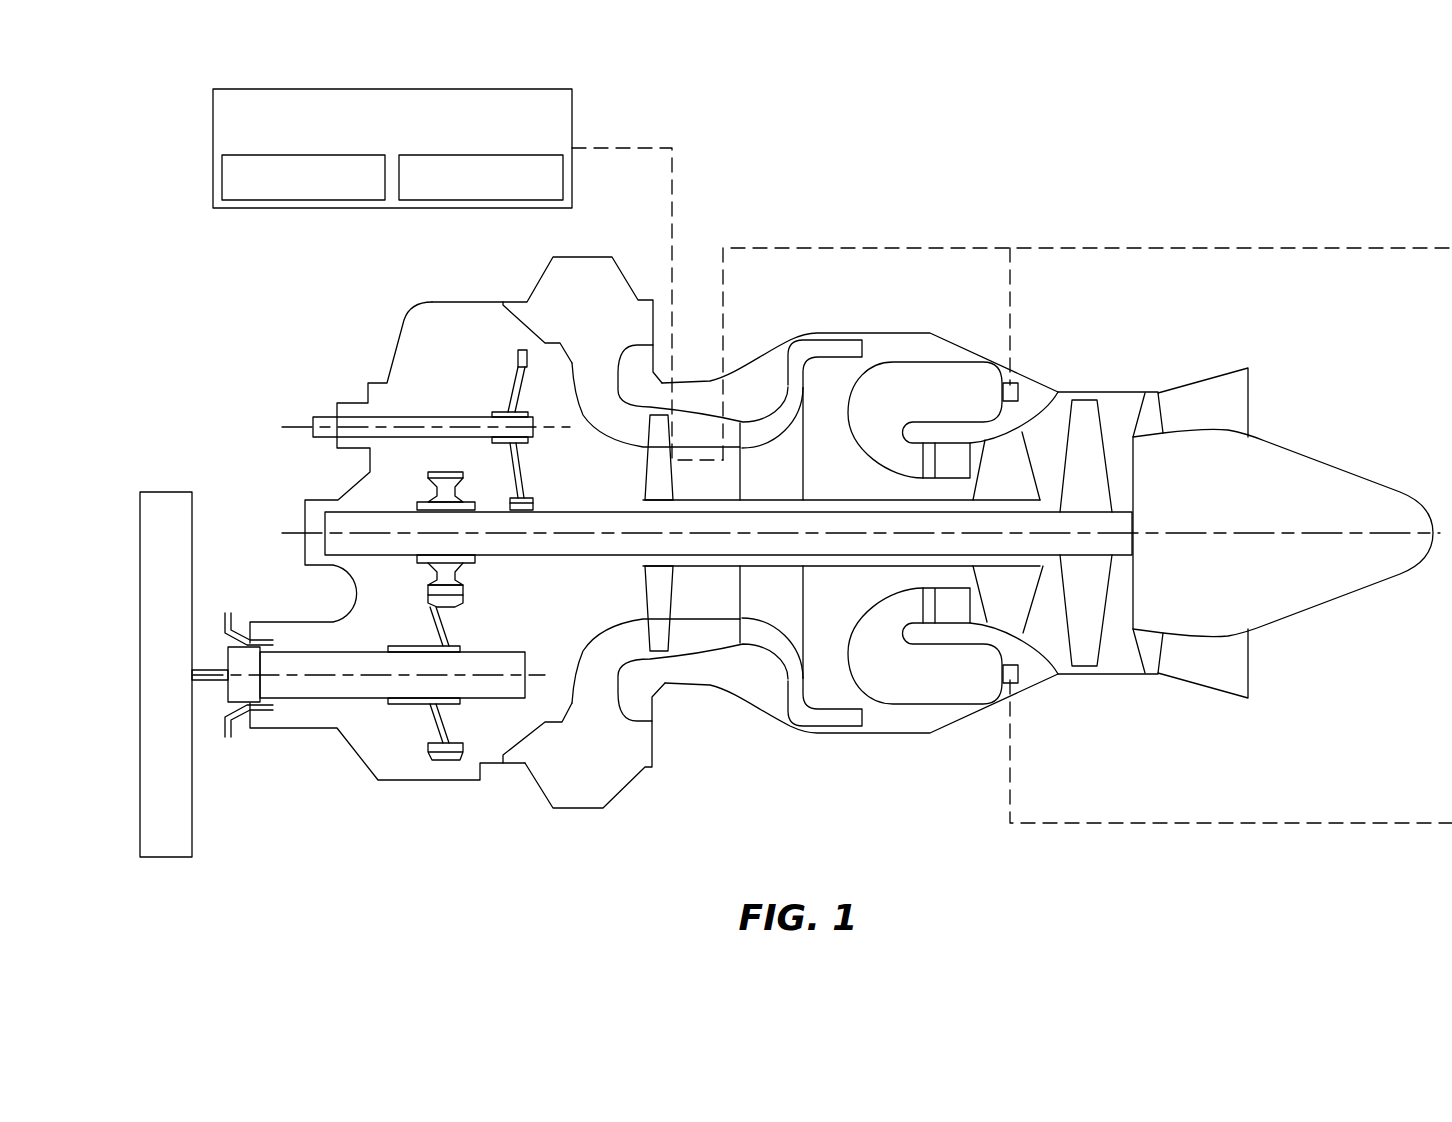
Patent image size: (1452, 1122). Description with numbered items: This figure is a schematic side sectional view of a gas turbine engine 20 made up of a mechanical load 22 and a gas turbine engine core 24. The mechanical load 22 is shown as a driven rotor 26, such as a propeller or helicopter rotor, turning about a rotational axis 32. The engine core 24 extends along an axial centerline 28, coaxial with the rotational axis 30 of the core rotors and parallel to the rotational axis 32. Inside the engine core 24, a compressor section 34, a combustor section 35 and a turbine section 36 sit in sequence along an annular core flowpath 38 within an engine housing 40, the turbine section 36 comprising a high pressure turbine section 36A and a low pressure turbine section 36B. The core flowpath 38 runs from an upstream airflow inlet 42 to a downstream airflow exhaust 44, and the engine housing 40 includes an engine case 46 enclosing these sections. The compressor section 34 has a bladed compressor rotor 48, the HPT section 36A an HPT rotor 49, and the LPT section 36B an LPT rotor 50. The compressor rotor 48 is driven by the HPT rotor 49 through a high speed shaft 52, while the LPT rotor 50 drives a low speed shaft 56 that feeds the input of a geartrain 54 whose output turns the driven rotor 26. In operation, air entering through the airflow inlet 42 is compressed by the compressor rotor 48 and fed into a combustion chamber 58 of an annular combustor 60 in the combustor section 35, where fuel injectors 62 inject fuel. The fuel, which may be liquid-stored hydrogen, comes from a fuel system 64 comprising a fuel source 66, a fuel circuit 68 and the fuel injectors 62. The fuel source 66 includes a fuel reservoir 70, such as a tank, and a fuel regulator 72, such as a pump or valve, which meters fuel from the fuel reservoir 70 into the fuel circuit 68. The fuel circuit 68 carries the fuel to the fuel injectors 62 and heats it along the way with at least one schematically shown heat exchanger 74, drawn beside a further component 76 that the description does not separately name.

The gas turbine engine 20 is at (1260, 128).
The mechanical load 22 is at (152, 607).
The gas turbine engine core 24 is at (546, 840).
The driven rotor 26 is at (170, 490).
The axial centerline 28 is at (1283, 532).
The rotational axis 30 is at (1193, 533).
The rotational axis of the driven rotor 32 is at (540, 673).
The compressor section 34 is at (699, 602).
The combustor section 35 is at (910, 537).
The turbine section 36 is at (1083, 545).
The high pressure turbine section 36A is at (1026, 414).
The low pressure turbine section 36B is at (1127, 485).
The core flowpath 38 is at (604, 396).
The engine housing 40 is at (910, 494).
The airflow inlet 42 is at (600, 257).
The airflow exhaust 44 is at (1248, 403).
The engine case 46 is at (882, 332).
The compressor rotor 48 is at (645, 588).
The HPT rotor 49 is at (975, 572).
The LPT rotor 50 is at (1108, 587).
The high speed shaft 52 is at (815, 500).
The geartrain 54 is at (391, 738).
The low speed shaft 56 is at (587, 510).
The combustion chamber 58 is at (945, 582).
The combustor 60 is at (889, 712).
The fuel injectors 62 is at (1010, 383).
The fuel system 64 is at (418, 236).
The fuel source 66 is at (392, 145).
The fuel circuit 68 is at (790, 244).
The fuel reservoir 70 is at (284, 208).
The fuel regulator 72 is at (440, 208).
The heat exchanger 74 is at (795, 509).
The fuel injector 76 is at (743, 413).